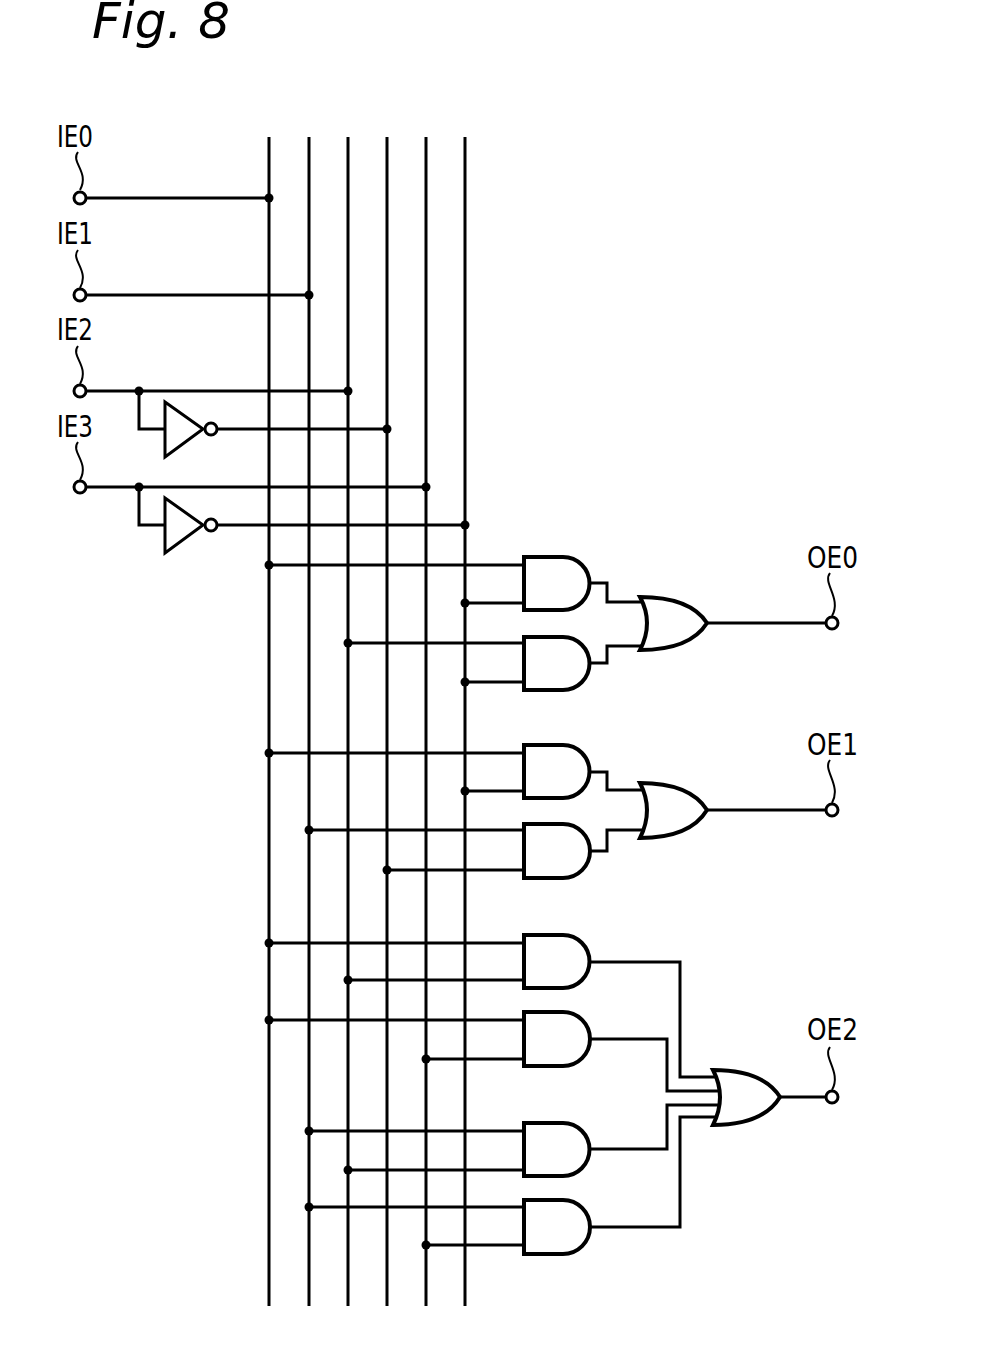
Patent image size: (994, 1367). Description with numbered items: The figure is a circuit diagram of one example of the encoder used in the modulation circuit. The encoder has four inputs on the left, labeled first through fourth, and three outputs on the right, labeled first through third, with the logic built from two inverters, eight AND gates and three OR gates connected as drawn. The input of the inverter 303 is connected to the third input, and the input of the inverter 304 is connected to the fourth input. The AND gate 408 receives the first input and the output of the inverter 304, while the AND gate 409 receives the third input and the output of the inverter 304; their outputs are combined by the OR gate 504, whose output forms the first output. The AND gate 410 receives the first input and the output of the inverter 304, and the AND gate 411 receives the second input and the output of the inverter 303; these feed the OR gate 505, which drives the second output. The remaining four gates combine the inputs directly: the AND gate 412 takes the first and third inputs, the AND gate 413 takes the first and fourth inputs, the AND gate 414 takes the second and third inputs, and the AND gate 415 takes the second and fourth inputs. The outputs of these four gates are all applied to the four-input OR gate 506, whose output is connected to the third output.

The inverter 303 is at (188, 441).
The inverter 304 is at (188, 537).
The AND gate 408 is at (588, 572).
The AND gate 409 is at (587, 672).
The AND gate 410 is at (588, 760).
The AND gate 411 is at (587, 860).
The AND gate 412 is at (588, 948).
The AND gate 413 is at (587, 1050).
The AND gate 414 is at (588, 1136).
The AND gate 415 is at (587, 1238).
The OR gate 504 is at (660, 596).
The OR gate 505 is at (660, 782).
The OR gate 506 is at (735, 1069).